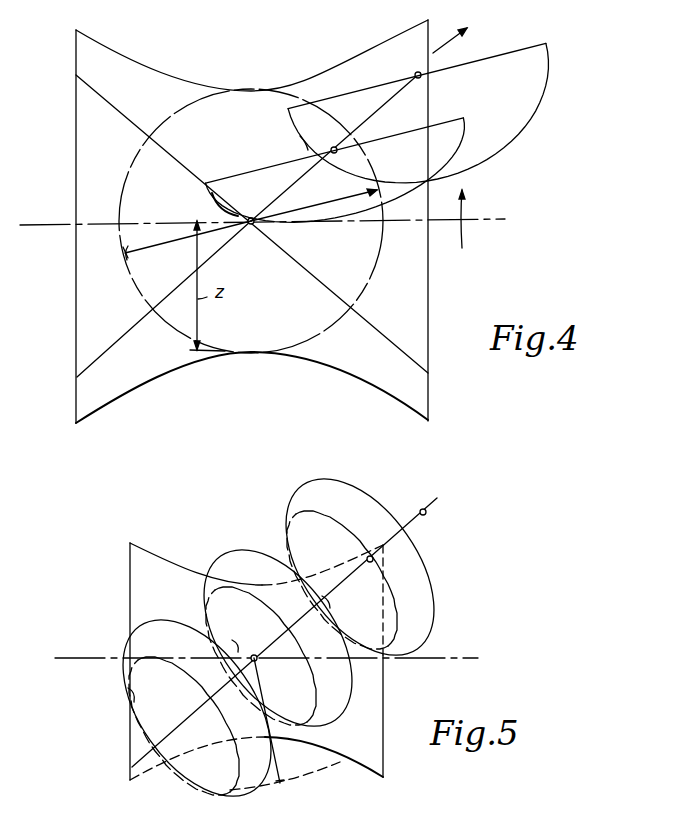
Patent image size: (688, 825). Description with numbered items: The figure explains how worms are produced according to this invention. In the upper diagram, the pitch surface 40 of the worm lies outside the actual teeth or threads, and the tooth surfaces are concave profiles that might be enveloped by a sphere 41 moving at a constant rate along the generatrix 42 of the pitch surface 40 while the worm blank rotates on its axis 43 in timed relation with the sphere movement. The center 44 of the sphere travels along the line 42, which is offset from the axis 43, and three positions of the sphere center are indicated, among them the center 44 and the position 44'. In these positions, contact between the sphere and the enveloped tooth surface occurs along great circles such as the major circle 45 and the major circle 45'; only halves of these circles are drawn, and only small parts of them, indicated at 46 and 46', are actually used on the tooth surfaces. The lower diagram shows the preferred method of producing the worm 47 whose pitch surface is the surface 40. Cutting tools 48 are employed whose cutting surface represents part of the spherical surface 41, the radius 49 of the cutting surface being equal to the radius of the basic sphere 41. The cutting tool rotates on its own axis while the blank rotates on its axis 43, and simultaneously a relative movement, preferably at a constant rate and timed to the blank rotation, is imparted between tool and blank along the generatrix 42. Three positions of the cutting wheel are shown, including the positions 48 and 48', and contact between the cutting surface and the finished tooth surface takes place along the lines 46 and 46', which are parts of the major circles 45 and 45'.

In FIG. 4, the pitch surface 40 is at (140, 66).
In FIG. 4, the sphere 41 is at (180, 108).
In FIG. 4, the generatrix 42 is at (370, 118).
In FIG. 5, the generatrix 42 is at (412, 524).
In FIG. 4, the axis 43 is at (487, 220).
In FIG. 5, the axis 43 is at (447, 657).
In FIG. 4, the center of the sphere 44 is at (252, 226).
In FIG. 5, the center of the sphere 44 is at (264, 642).
In FIG. 4, the second position of the sphere center 44' is at (343, 132).
In FIG. 5, the second position of the sphere center 44' is at (389, 567).
In FIG. 4, the major circle 45 is at (250, 232).
In FIG. 4, the major circle 45' is at (335, 170).
In FIG. 4, the used part of major circle 46 is at (140, 264).
In FIG. 5, the used part of major circle 46 is at (118, 707).
In FIG. 4, the used part of major circle 46' is at (204, 204).
In FIG. 5, the used part of major circle 46' is at (214, 646).
In FIG. 5, the worm 47 is at (143, 550).
In FIG. 5, the cutting tool 48 is at (197, 707).
In FIG. 5, the cutting tool 48' is at (278, 637).
In FIG. 5, the radius of the cutting surface 49 is at (276, 765).